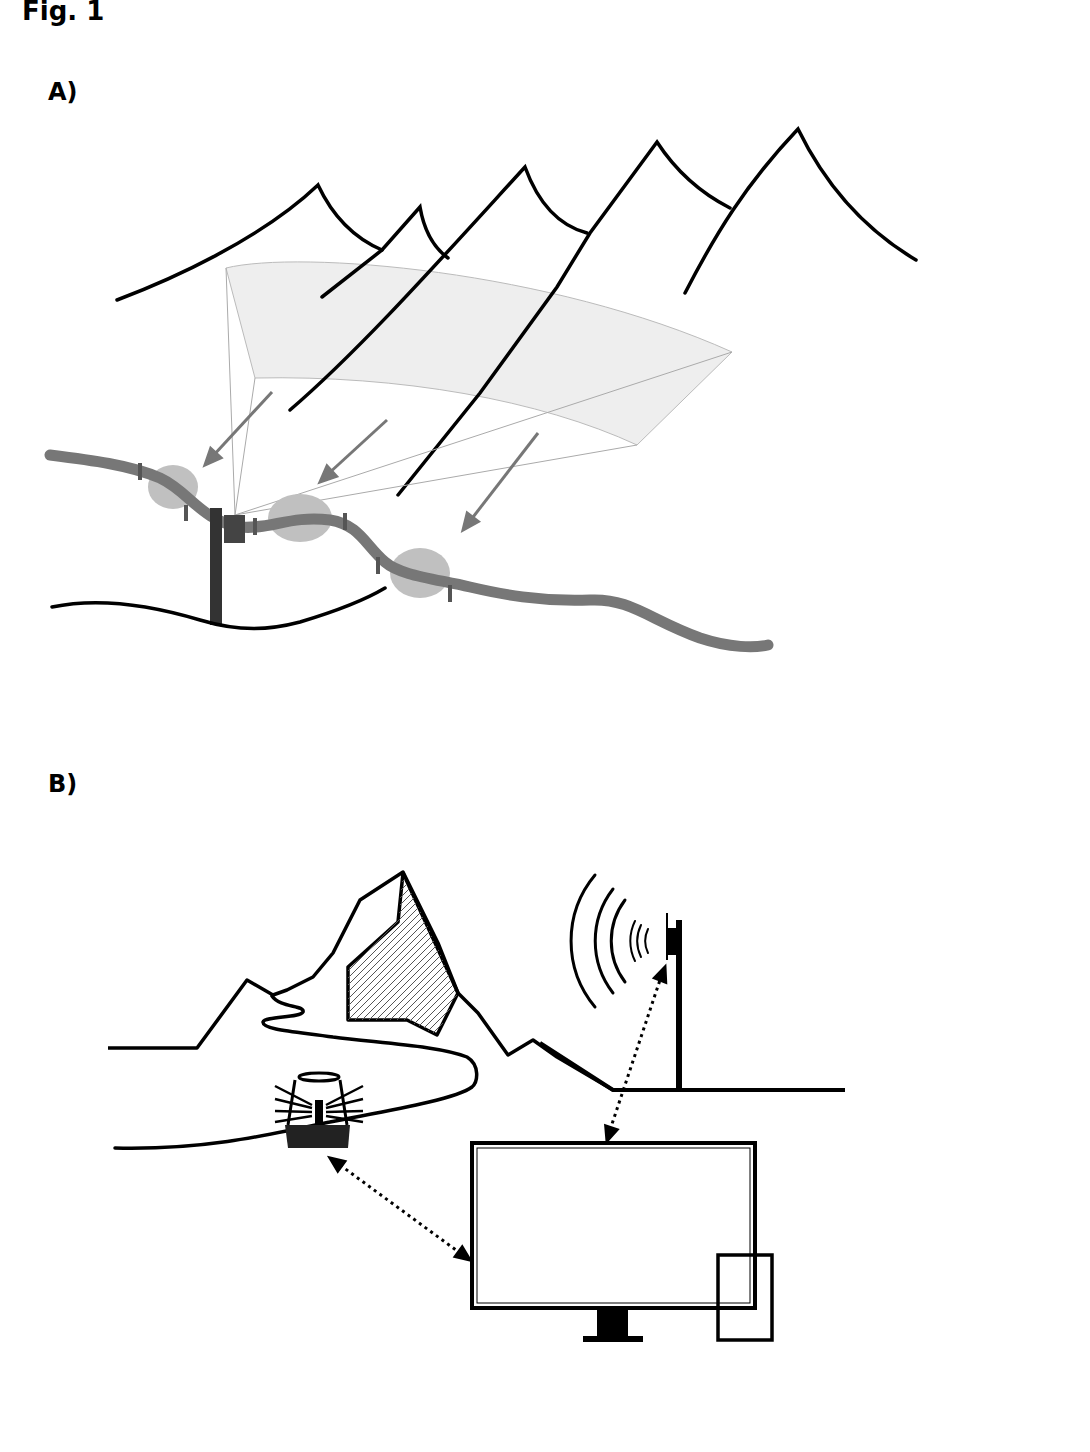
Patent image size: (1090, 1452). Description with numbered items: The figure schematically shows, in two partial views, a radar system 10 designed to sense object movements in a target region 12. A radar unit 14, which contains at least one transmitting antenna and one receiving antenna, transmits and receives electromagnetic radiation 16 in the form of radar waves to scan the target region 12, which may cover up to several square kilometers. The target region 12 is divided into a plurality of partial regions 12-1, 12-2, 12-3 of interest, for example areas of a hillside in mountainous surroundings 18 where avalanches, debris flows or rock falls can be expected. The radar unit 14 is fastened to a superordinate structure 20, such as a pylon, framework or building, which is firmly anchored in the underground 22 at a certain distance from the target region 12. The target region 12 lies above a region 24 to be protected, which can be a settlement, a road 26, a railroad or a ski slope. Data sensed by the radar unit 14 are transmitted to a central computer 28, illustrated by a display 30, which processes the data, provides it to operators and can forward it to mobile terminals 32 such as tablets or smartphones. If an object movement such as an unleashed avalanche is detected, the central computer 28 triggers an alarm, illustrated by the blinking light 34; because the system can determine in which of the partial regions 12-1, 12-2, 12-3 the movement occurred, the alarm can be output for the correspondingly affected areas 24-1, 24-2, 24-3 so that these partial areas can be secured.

The radar system 10 is at (170, 385).
The target region 12 is at (479, 558).
The first partial region 12-1 is at (305, 328).
The second partial region 12-2 is at (452, 331).
The third partial region 12-3 is at (596, 354).
The radar unit 14 is at (226, 541).
The electromagnetic radiation 16 is at (599, 908).
The mountainous surroundings 18 is at (285, 200).
The superordinate structure 20 is at (210, 588).
The underground 22 is at (168, 616).
The region to be protected 24 is at (409, 787).
The first affected area 24-1 is at (153, 497).
The second affected area 24-2 is at (290, 500).
The third affected area 24-3 is at (420, 597).
The road 26 is at (510, 600).
The central computer 28 is at (613, 1225).
The display 30 is at (492, 1310).
The mobile terminal 32 is at (745, 1297).
The blinking light 34 is at (305, 1150).